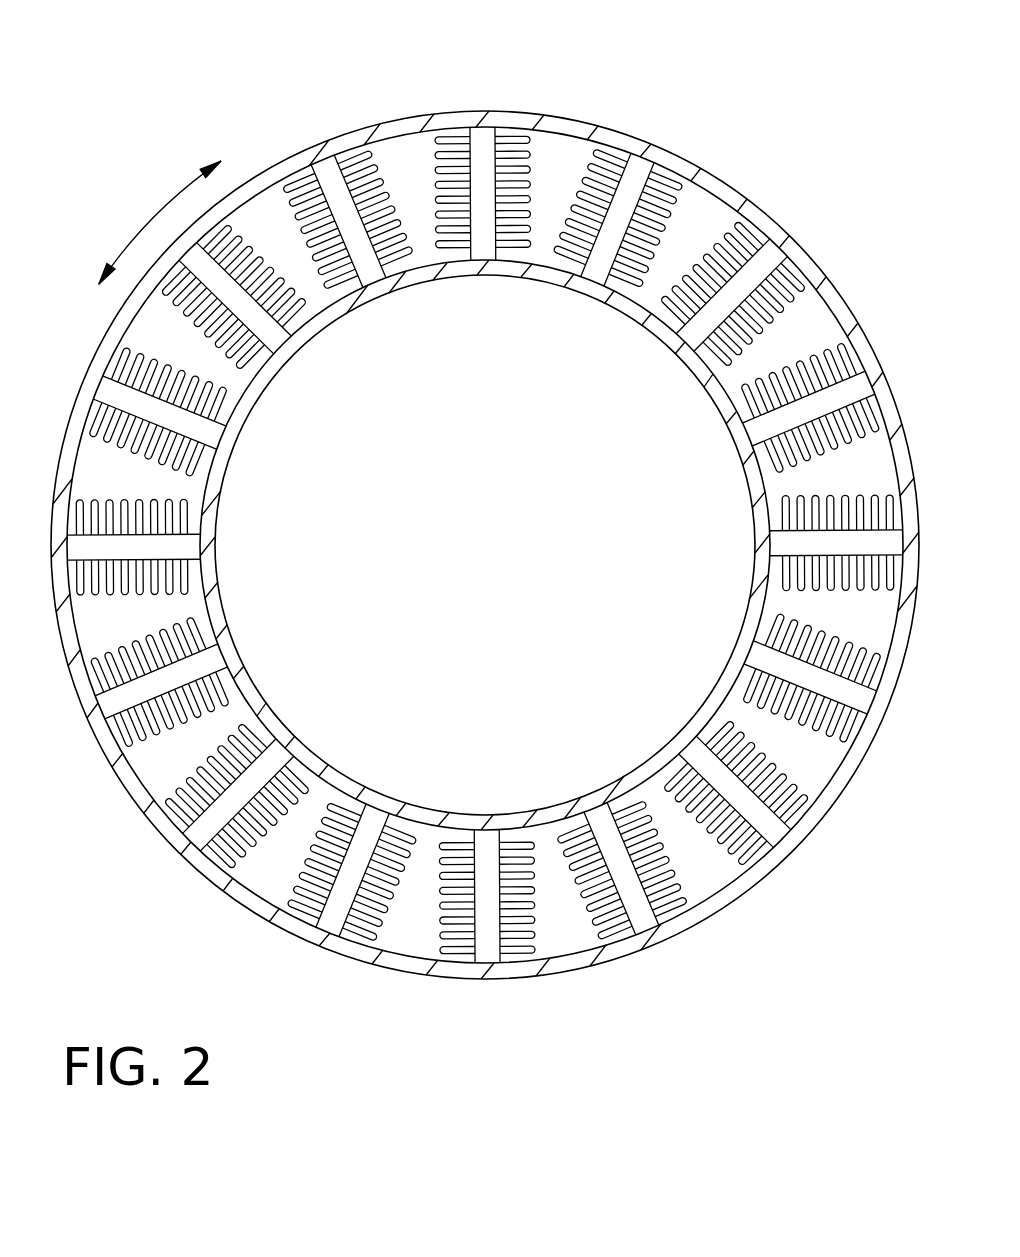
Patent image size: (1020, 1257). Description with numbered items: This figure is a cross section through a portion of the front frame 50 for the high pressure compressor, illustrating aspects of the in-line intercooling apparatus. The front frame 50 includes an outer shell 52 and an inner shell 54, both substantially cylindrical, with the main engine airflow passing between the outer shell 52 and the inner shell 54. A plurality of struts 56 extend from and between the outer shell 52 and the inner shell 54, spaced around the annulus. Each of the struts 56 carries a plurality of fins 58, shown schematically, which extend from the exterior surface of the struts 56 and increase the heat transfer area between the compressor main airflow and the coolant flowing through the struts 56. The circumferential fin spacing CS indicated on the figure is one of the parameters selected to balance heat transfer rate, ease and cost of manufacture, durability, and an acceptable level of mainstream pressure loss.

The front frame 50 is at (502, 97).
The outer shell 52 is at (787, 230).
The inner shell 54 is at (717, 407).
The struts 56 is at (330, 172).
The fins 58 is at (528, 278).
The circumferential fin spacing CS is at (152, 218).